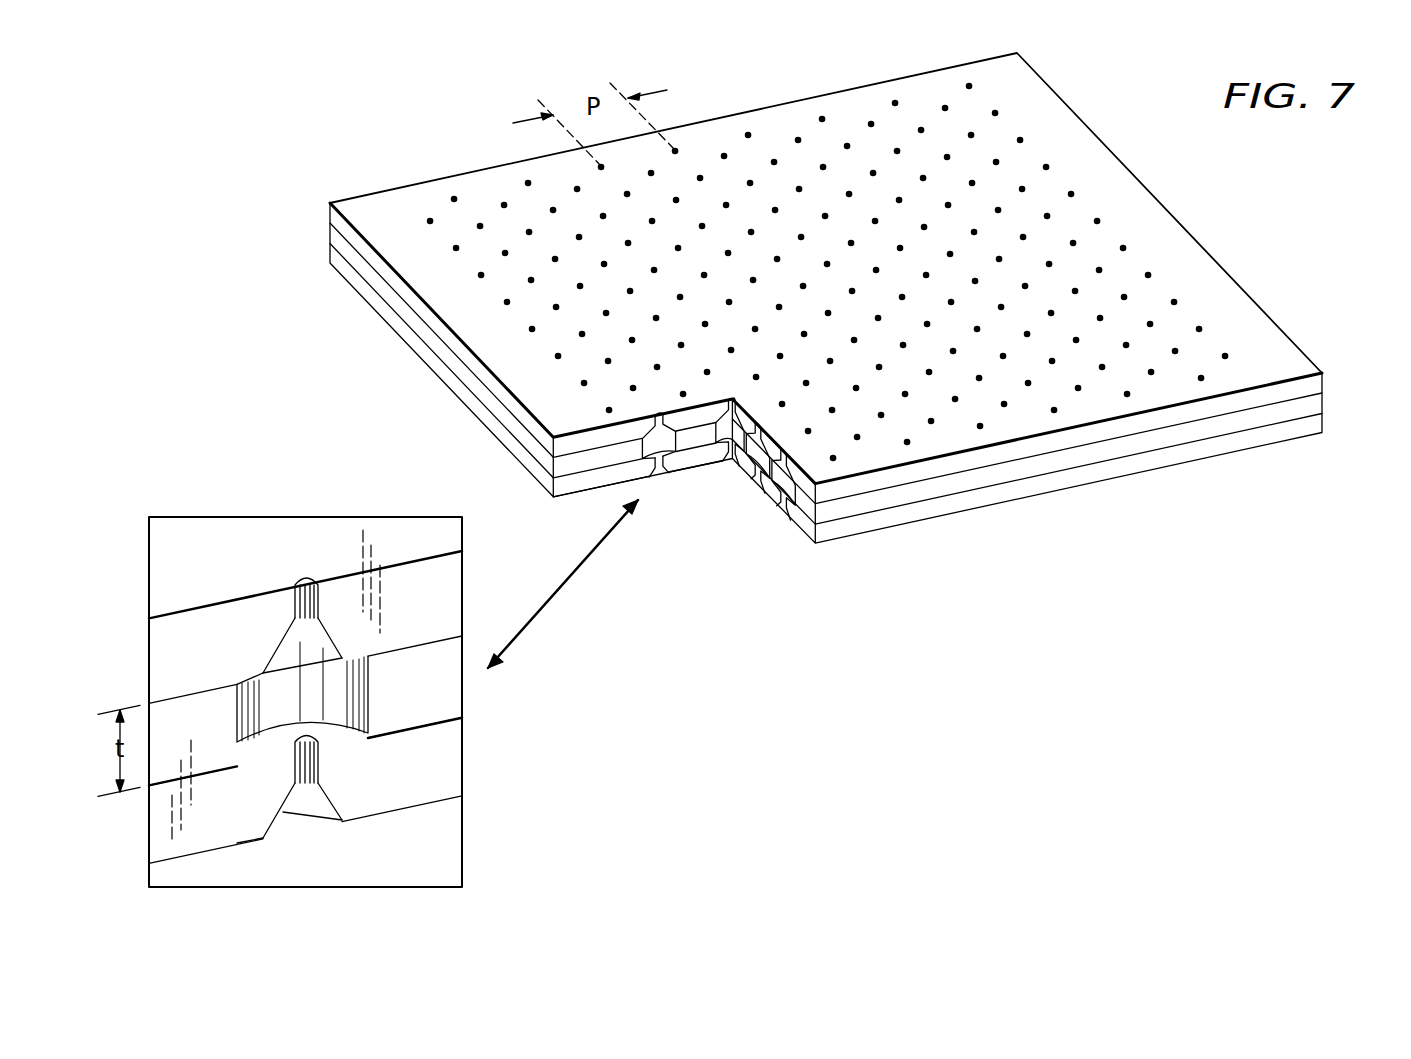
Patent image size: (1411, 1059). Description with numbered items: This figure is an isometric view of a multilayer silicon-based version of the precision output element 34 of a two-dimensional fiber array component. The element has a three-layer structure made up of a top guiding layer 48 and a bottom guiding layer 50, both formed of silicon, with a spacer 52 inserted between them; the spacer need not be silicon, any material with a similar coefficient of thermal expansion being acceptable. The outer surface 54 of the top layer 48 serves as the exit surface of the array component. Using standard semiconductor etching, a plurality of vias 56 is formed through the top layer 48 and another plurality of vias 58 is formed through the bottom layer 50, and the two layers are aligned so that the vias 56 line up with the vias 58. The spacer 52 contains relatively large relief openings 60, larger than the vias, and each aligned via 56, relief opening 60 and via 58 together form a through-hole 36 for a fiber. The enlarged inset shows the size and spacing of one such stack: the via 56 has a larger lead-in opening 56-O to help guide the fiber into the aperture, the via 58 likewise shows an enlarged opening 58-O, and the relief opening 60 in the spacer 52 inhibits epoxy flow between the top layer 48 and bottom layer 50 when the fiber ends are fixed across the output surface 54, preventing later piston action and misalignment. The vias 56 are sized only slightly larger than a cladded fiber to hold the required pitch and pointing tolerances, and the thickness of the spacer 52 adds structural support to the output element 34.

The precision output element 34 is at (1232, 176).
The through-hole 36 is at (897, 103).
The top guiding layer 48 is at (1323, 383).
The bottom guiding layer 50 is at (1323, 427).
The spacer 52 is at (330, 232).
The outer surface 54 is at (398, 200).
The vias 56 is at (658, 413).
The lead-in opening 56-O is at (305, 663).
The vias 58 is at (663, 472).
The lead-in opening of via 58 58-O is at (308, 822).
The relief openings 60 is at (678, 443).